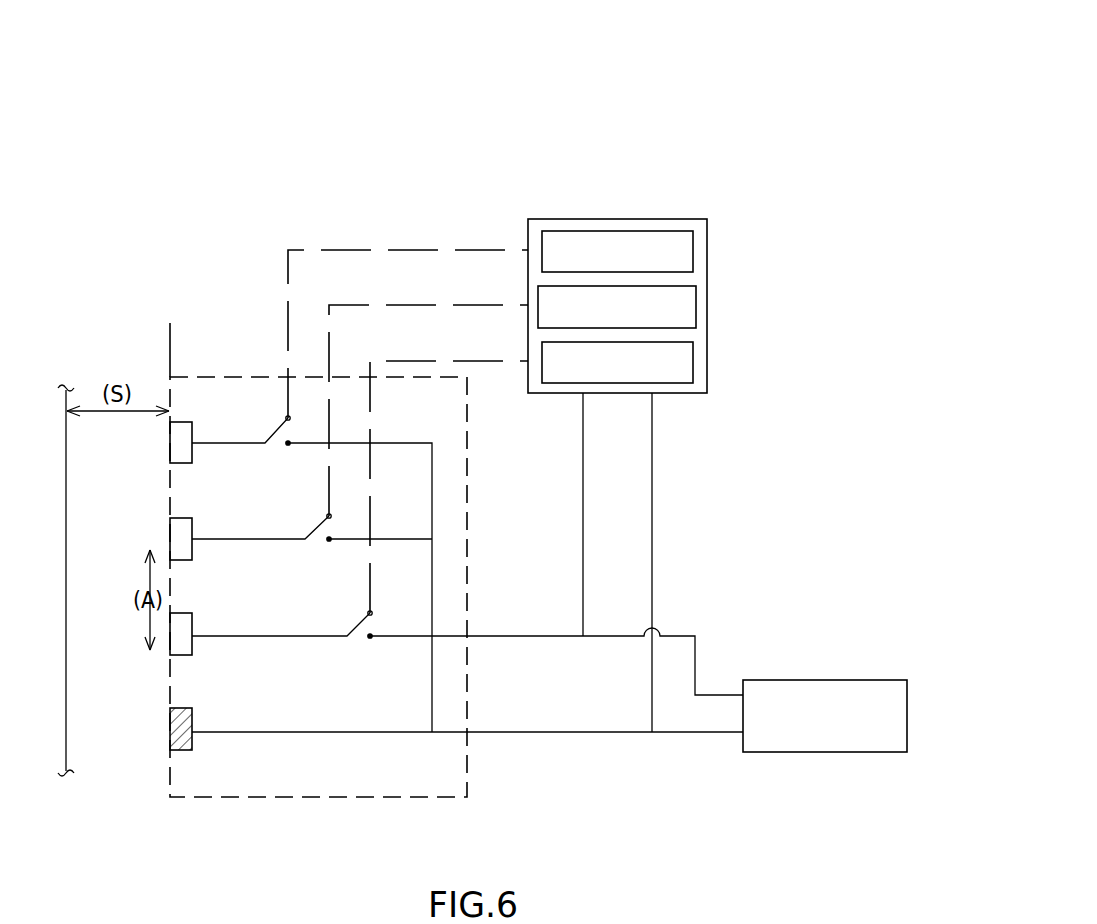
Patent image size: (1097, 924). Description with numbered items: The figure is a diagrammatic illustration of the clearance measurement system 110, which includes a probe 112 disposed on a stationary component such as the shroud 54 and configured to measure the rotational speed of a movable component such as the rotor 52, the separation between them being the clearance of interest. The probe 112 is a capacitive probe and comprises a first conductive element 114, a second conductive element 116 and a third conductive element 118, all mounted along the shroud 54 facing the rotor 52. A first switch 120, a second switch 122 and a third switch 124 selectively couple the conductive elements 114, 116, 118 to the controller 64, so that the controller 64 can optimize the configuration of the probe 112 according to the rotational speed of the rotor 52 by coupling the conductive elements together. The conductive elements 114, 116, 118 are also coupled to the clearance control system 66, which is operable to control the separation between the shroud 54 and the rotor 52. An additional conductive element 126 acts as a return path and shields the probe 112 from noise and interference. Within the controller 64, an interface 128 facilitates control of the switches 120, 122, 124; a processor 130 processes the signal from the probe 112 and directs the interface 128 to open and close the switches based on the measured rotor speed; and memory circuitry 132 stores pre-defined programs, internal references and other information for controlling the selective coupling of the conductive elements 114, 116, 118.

The clearance measurement system 110 is at (715, 48).
The rotor 52 is at (64, 389).
The shroud 54 is at (167, 345).
The probe 112 is at (196, 377).
The first conductive element 114 is at (193, 456).
The second conductive element 116 is at (193, 553).
The third conductive element 118 is at (193, 648).
The first switch 120 is at (276, 432).
The second switch 122 is at (318, 529).
The third switch 124 is at (354, 633).
The additional conductive element 126 is at (193, 745).
The controller 64 is at (618, 219).
The interface 128 is at (694, 252).
The processor 130 is at (697, 307).
The memory circuitry 132 is at (694, 362).
The clearance control system 66 is at (824, 680).